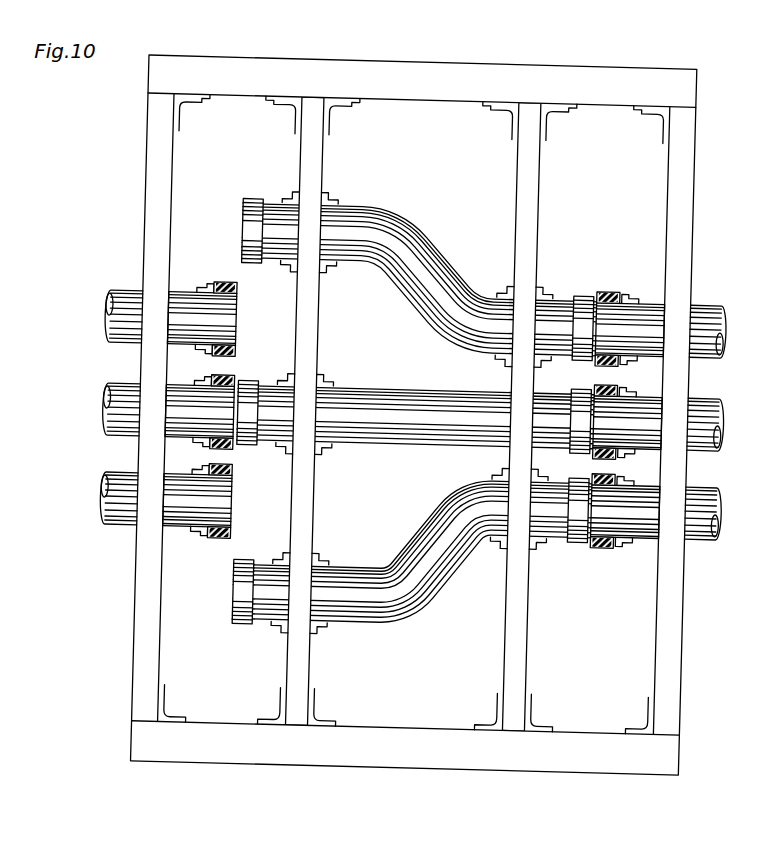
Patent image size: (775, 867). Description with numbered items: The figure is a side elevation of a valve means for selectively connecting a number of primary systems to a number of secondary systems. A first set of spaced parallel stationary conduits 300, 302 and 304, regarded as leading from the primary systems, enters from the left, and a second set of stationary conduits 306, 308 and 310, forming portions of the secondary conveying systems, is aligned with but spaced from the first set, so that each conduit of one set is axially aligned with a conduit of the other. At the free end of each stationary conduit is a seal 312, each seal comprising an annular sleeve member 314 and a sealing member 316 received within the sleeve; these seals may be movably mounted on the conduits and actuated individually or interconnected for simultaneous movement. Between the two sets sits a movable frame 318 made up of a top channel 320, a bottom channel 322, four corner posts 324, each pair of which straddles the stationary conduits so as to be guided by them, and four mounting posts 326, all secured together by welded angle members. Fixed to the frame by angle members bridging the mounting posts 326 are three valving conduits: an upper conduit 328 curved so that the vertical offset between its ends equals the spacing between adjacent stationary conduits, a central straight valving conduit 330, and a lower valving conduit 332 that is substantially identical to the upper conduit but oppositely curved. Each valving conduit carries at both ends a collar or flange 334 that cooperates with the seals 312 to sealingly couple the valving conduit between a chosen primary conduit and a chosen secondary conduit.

The stationary conduit 300 is at (135, 294).
The stationary conduit 302 is at (130, 388).
The stationary conduit 304 is at (130, 478).
The stationary conduit 306 is at (702, 305).
The stationary conduit 308 is at (704, 396).
The stationary conduit 310 is at (704, 487).
The seal 312 is at (222, 290).
The annular sleeve member 314 is at (229, 285).
The sealing member 316 is at (238, 290).
The movable frame 318 is at (140, 131).
The top channel 320 is at (153, 86).
The bottom channel 322 is at (401, 755).
The corner post 324 is at (158, 168).
The mounting post 326 is at (306, 659).
The upper valving conduit 328 is at (401, 236).
The central straight valving conduit 330 is at (372, 386).
The lower valving conduit 332 is at (425, 507).
The collar or flange 334 is at (257, 205).